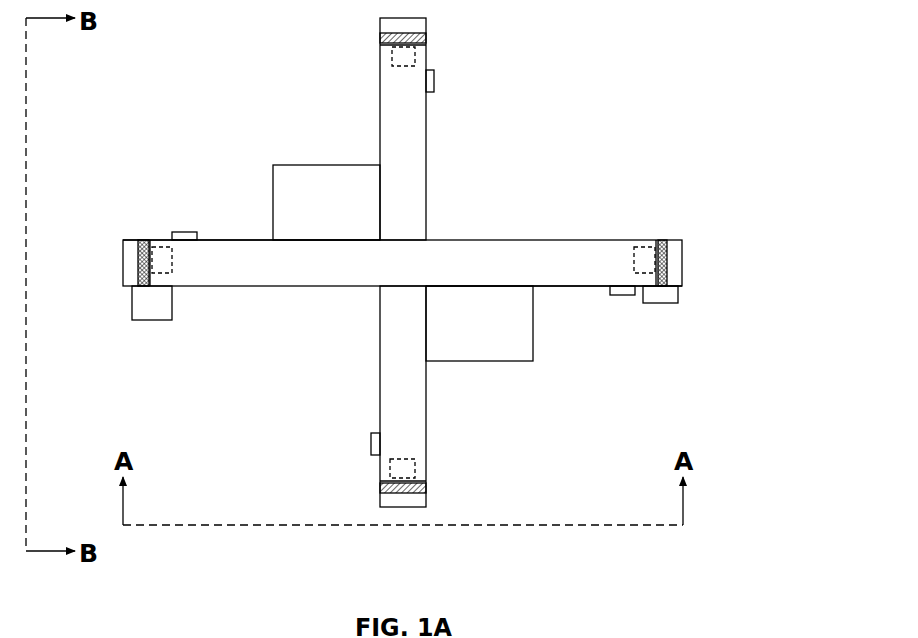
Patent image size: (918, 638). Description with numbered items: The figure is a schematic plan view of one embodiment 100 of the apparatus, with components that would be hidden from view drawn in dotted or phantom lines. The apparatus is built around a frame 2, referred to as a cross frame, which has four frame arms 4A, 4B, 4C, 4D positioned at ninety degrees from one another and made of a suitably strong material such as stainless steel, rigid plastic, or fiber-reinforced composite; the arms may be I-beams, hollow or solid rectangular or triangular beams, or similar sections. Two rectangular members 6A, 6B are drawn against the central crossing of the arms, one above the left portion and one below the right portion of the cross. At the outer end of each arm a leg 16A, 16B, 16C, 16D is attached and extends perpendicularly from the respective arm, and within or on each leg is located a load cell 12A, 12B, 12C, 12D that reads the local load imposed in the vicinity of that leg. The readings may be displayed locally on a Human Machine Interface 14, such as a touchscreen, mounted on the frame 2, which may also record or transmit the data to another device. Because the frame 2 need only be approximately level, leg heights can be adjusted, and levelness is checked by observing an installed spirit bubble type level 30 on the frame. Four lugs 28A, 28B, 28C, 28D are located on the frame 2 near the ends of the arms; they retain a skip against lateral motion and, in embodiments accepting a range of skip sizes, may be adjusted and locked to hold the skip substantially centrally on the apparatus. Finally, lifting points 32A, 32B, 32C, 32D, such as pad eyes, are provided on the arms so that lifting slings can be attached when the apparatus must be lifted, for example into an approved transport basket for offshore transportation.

The apparatus embodiment 100 is at (700, 59).
The frame 2 is at (528, 240).
The frame arm 4A is at (426, 152).
The frame arm 4B is at (590, 240).
The frame arm 4C is at (426, 418).
The frame arm 4D is at (232, 288).
The first block 6A is at (325, 165).
The second block 6B is at (510, 361).
The load cell 12A is at (393, 54).
The load cell 12B is at (655, 240).
The load cell 12C is at (428, 483).
The load cell 12D is at (152, 240).
The Human Machine Interface 14 is at (148, 320).
The leg 16A is at (415, 62).
The leg 16B is at (675, 268).
The leg 16C is at (390, 470).
The leg 16D is at (170, 275).
The lug 28A is at (426, 38).
The lug 28B is at (662, 242).
The lug 28C is at (380, 488).
The lug 28D is at (143, 242).
The spirit bubble type level 30 is at (660, 303).
The lifting point 32A is at (434, 80).
The lifting point 32B is at (622, 295).
The lifting point 32C is at (371, 440).
The lifting point 32D is at (190, 232).